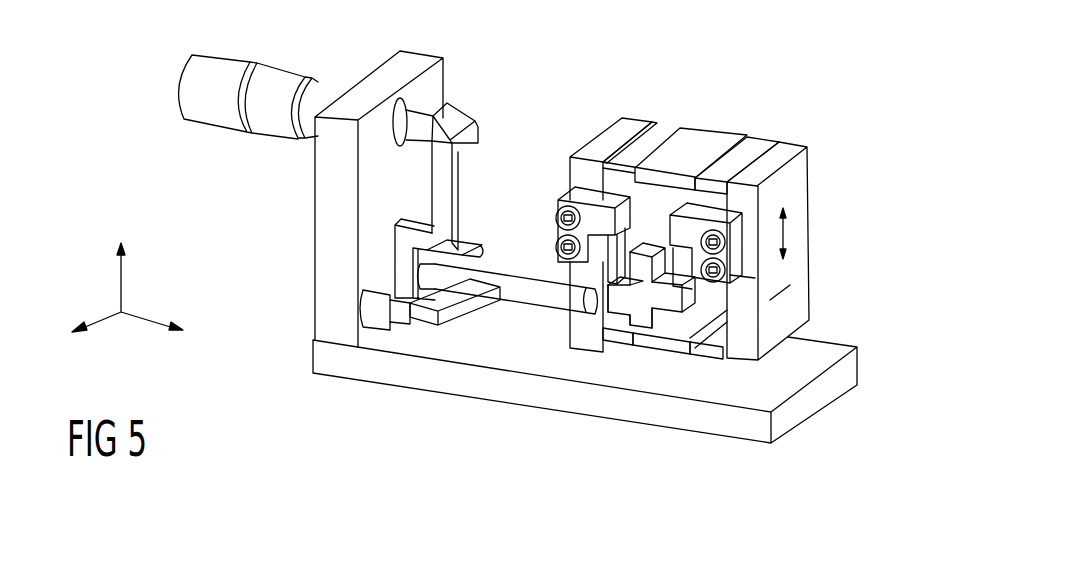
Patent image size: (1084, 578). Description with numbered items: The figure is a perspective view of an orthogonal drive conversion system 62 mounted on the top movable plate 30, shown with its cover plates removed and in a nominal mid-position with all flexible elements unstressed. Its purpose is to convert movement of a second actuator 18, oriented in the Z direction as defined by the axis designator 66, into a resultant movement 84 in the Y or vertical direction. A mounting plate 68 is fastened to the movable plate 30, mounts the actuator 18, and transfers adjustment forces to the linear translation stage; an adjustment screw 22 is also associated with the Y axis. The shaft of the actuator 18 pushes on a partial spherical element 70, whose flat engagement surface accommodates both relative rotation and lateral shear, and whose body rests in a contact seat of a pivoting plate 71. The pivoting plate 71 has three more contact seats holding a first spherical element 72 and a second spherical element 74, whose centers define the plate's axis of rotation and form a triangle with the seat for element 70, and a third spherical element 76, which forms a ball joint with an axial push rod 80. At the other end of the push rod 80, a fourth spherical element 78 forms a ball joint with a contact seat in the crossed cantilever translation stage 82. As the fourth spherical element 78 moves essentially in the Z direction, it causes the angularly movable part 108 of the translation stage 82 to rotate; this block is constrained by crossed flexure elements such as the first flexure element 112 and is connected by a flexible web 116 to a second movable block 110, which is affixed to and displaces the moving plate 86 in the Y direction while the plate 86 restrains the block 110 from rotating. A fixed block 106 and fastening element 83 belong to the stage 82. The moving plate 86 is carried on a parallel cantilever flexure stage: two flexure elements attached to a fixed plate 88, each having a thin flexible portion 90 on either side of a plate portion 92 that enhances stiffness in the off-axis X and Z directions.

The second actuator 18 is at (188, 90).
The adjustment screw 22 is at (376, 320).
The top movable plate 30 is at (730, 422).
The orthogonal drive conversion system 62 is at (648, 43).
The axis designator 66 is at (142, 292).
The mounting plate 68 is at (407, 64).
The partial spherical element 70 is at (448, 106).
The pivoting plate 71 is at (474, 134).
The first spherical element 72 is at (488, 255).
The second spherical element 74 is at (405, 320).
The third spherical element 76 is at (423, 272).
The fourth spherical element 78 is at (596, 293).
The axial push rod 80 is at (521, 290).
The crossed cantilever translation stage 82 is at (808, 148).
The fastening element 83 is at (750, 272).
The movement designator 84 is at (783, 233).
The moving plate 86 is at (783, 300).
The fixed plate 88 is at (613, 137).
The flexible portion 90 is at (648, 138).
The plate portion 92 is at (697, 142).
The fixed block 106 is at (600, 215).
The angularly movable part 108 is at (637, 288).
The second movable block 110 is at (760, 192).
The first flexure element 112 is at (620, 255).
The flexible web 116 is at (700, 262).